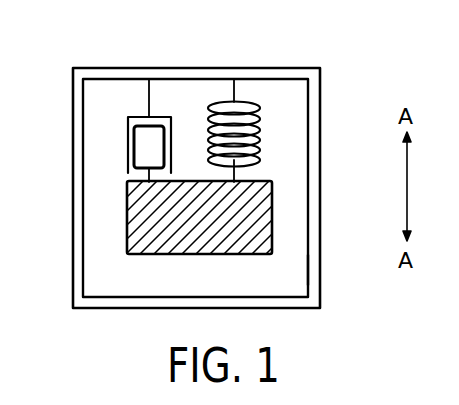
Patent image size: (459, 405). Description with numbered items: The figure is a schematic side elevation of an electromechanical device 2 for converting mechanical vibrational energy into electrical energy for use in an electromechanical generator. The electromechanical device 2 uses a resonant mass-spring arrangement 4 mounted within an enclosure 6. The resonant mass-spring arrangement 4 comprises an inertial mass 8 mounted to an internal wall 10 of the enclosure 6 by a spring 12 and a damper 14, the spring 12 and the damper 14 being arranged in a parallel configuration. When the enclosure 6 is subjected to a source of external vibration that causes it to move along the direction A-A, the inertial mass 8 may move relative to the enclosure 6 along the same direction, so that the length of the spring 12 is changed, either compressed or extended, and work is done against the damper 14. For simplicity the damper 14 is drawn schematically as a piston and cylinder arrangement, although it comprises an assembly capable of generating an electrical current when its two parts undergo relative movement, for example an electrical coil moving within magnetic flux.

The sensor device 2 is at (245, 41).
The substrate block 4 is at (197, 254).
The housing wall 6 is at (310, 211).
The hatched material body 8 is at (135, 222).
The interior cavity 10 is at (308, 267).
The coil 12 is at (260, 131).
The capacitor component 14 is at (128, 140).